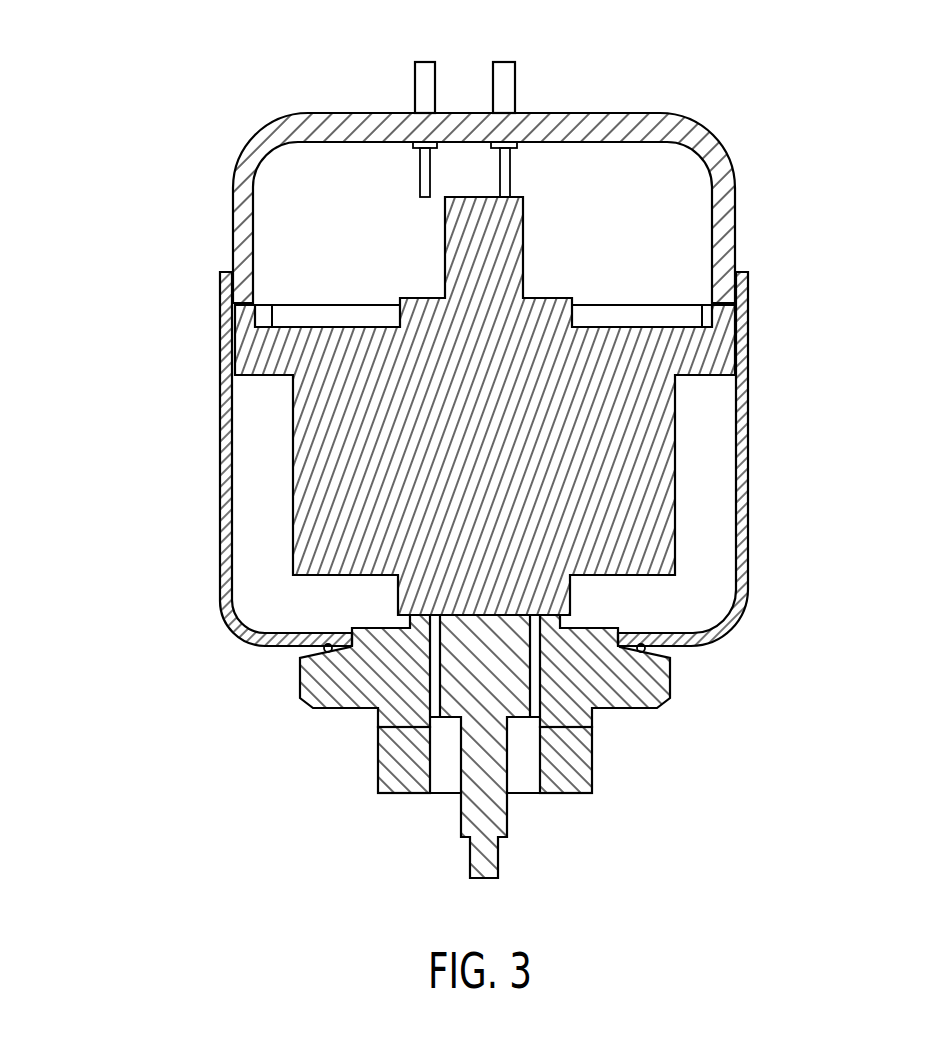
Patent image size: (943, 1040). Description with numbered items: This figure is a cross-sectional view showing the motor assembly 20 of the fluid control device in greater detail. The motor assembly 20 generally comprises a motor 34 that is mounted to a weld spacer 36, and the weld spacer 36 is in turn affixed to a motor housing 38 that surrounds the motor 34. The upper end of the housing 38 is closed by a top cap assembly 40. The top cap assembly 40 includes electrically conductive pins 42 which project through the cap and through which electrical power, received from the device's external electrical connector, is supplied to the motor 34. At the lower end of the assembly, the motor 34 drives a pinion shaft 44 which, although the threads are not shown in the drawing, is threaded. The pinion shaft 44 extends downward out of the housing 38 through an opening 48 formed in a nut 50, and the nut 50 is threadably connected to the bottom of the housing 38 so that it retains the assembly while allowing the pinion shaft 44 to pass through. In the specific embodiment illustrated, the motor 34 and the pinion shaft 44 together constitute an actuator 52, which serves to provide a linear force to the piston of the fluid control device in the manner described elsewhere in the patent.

The motor assembly 20 is at (121, 235).
The motor 34 is at (662, 512).
The weld spacer 36 is at (660, 315).
The motor housing 38 is at (750, 568).
The top cap assembly 40 is at (708, 140).
The electrically conductive pins 42 is at (432, 62).
The pinion shaft 44 is at (495, 817).
The opening 48 is at (435, 705).
The nut 50 is at (540, 700).
The actuator 52 is at (278, 493).